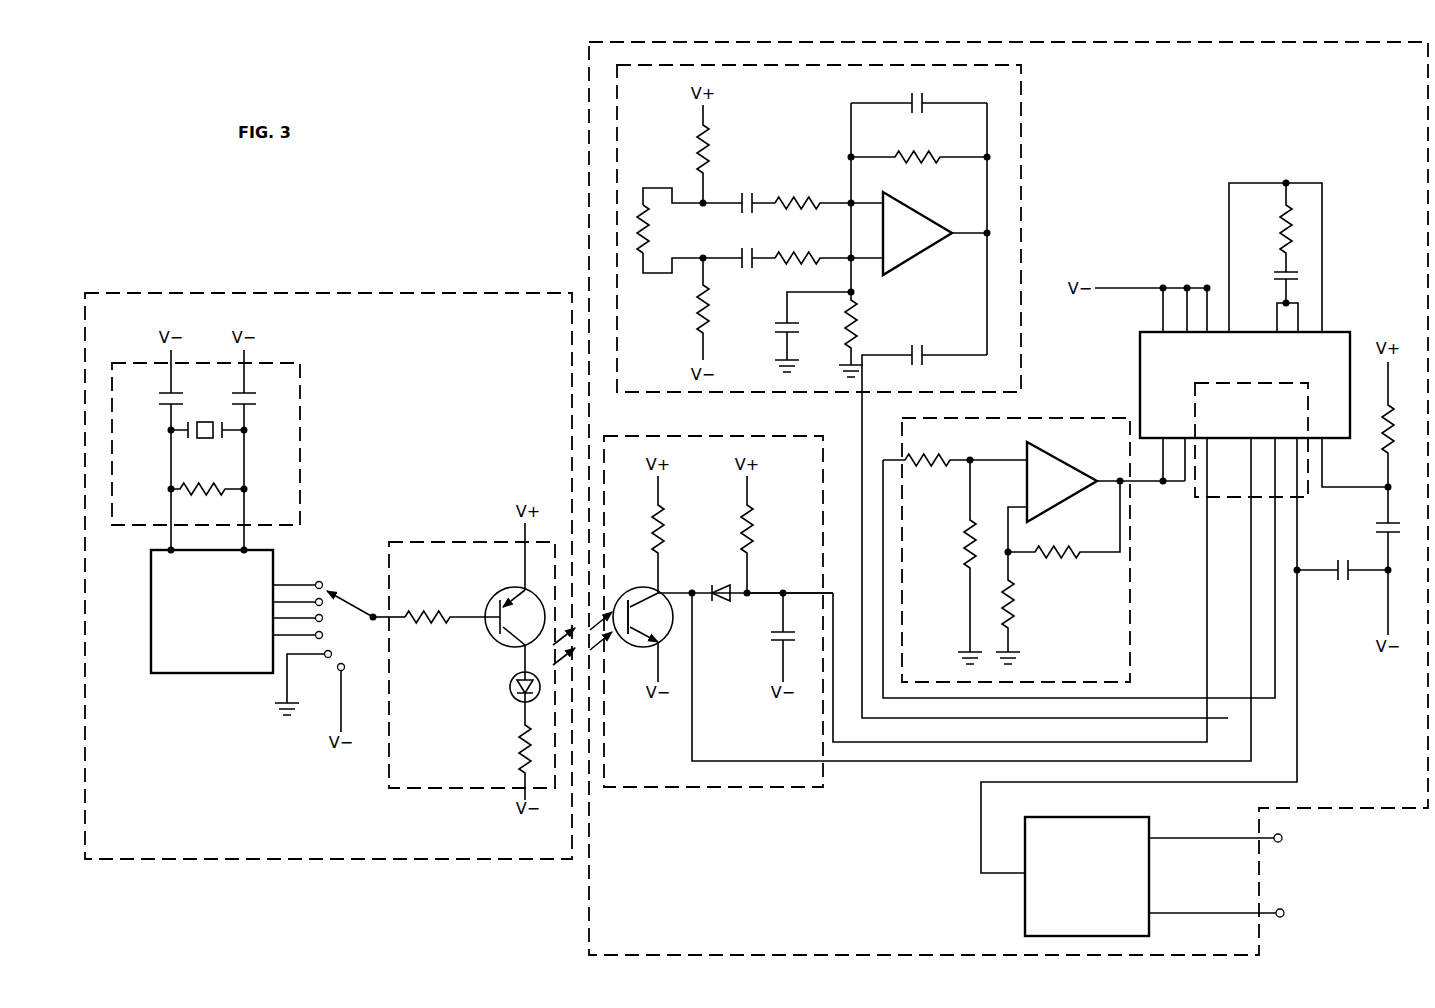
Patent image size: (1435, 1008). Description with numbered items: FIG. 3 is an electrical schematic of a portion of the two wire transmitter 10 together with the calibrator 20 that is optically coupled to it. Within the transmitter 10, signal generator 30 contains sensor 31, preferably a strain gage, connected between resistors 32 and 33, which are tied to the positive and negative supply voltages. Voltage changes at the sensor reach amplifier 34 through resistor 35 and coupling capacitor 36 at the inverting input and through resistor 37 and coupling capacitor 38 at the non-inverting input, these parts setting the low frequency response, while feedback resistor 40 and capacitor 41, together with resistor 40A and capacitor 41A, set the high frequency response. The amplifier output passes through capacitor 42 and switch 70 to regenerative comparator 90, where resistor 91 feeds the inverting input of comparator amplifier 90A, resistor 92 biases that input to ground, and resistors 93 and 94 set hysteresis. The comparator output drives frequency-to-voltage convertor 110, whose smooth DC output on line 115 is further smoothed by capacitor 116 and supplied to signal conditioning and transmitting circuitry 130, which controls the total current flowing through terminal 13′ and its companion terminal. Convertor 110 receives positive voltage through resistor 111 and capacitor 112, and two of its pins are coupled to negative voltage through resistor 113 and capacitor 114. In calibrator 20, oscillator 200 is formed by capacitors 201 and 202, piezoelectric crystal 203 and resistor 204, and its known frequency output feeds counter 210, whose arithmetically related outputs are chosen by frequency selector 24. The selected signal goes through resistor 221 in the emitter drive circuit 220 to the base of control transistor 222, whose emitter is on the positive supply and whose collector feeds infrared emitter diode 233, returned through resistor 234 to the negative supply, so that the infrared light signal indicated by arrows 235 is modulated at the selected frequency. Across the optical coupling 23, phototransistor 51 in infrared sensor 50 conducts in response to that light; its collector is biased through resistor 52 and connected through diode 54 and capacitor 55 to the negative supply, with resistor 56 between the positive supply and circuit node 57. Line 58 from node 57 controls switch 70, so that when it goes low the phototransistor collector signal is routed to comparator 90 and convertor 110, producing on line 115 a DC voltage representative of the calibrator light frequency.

The two wire transmitter 10 is at (588, 172).
The calibrator 20 is at (332, 290).
The oscillator 200 is at (300, 460).
The capacitor 201 is at (172, 399).
The capacitor 202 is at (248, 397).
The piezoelectric crystal 203 is at (210, 440).
The resistor 204 is at (185, 485).
The counter 210 is at (195, 673).
The frequency selector 24 is at (349, 581).
The light emitting circuit 220 is at (389, 785).
The resistor 221 is at (430, 600).
The control transistor 222 is at (505, 590).
The infrared emitter diode 233 is at (508, 687).
The resistor 234 is at (516, 753).
The arrows 235 is at (610, 652).
The optical coupling 23 is at (590, 605).
The signal generator 30 is at (1021, 137).
The sensor 31 is at (644, 203).
The resistor 32 is at (710, 142).
The resistor 33 is at (695, 306).
The amplifier 34 is at (918, 262).
The resistor 35 is at (794, 195).
The coupling capacitor 36 is at (747, 190).
The resistor 37 is at (796, 254).
The coupling capacitor 38 is at (745, 267).
The resistor 40 is at (922, 152).
The resistor 40A is at (854, 332).
The capacitor 41 is at (929, 96).
The capacitor 41A is at (787, 326).
The capacitor 42 is at (924, 344).
The infrared sensor 50 is at (742, 787).
The phototransistor 51 is at (655, 585).
The resistor 52 is at (668, 522).
The diode 54 is at (730, 605).
The capacitor 55 is at (775, 640).
The resistor 56 is at (755, 524).
The circuit node 57 is at (783, 588).
The line 58 is at (833, 592).
The switch 70 is at (1195, 497).
The regenerative comparator 90 is at (1130, 650).
The comparator amplifier 90A is at (1059, 445).
The resistor 91 is at (938, 467).
The resistor 92 is at (968, 558).
The resistor 93 is at (1070, 555).
The resistor 94 is at (1018, 605).
The frequency-to-voltage convertor 110 is at (1140, 347).
The resistor 111 is at (1394, 422).
The capacitor 112 is at (1376, 528).
The resistor 113 is at (1280, 242).
The capacitor 114 is at (1278, 280).
The line 115 is at (1297, 770).
The capacitor 116 is at (1344, 585).
The signal conditioning and transmitting circuitry 130 is at (1025, 910).
The terminal 13′ is at (1283, 838).